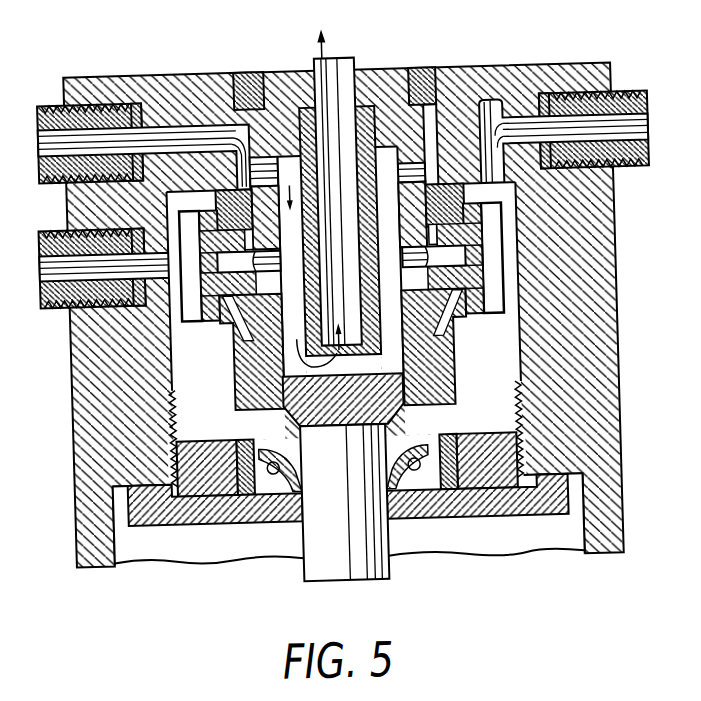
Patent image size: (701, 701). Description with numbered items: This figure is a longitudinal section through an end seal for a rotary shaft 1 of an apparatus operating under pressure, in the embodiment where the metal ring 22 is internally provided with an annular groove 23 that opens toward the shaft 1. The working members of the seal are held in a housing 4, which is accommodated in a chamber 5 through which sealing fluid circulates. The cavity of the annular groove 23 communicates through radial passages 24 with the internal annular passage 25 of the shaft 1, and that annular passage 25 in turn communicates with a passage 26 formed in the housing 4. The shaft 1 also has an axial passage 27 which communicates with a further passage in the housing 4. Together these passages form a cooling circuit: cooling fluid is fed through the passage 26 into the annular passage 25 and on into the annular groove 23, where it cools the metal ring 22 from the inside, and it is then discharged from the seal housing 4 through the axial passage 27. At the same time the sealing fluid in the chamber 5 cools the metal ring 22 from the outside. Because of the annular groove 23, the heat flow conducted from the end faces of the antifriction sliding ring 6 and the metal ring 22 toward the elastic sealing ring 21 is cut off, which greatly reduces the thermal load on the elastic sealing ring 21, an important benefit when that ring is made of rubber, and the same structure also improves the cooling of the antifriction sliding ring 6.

The rotary shaft 1 is at (386, 541).
The housing 4 is at (619, 356).
The chamber 5 is at (189, 394).
The antifriction sliding ring 6 is at (428, 206).
The elastic sealing ring 21 is at (238, 312).
The metal ring 22 is at (470, 318).
The annular groove 23 is at (485, 260).
The radial passages 24 is at (273, 270).
The internal annular passage 25 is at (400, 360).
The passage in the housing 26 is at (178, 127).
The axial passage 27 is at (362, 192).